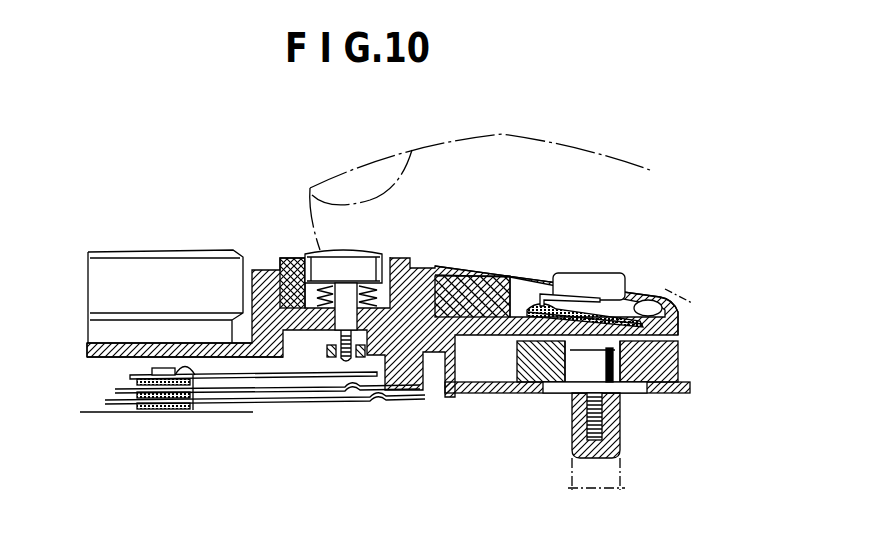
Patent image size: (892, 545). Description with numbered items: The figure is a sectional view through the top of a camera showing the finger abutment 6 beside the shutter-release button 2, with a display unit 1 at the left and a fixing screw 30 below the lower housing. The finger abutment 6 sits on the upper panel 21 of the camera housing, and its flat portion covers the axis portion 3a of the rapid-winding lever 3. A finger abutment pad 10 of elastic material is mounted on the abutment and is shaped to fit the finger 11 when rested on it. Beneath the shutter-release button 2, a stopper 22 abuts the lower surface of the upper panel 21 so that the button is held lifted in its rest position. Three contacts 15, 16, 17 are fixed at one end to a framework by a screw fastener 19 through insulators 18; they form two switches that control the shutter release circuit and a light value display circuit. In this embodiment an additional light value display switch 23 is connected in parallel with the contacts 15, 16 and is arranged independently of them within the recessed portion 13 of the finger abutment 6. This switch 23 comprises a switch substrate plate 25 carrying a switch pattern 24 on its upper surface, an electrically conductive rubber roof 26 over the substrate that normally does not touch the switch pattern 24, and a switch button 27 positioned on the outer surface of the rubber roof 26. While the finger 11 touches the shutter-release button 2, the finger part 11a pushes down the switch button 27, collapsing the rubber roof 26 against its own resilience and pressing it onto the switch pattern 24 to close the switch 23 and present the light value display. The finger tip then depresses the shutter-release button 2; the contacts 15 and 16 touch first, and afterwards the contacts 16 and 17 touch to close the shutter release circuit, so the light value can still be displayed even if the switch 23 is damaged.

The display unit 1 is at (153, 270).
The shutter-release button 2 is at (328, 263).
The rapid-winding lever 3 is at (665, 370).
The axis portion of the rapid-winding lever 3a is at (580, 372).
The finger abutment 6 is at (450, 264).
The finger abutment pad 10 is at (492, 270).
The finger 11 is at (557, 145).
The finger part 11a is at (686, 300).
The recessed portion 13 is at (680, 330).
The contact 15 is at (271, 381).
The contact 16 is at (295, 393).
The contact 17 is at (326, 402).
The insulators 18 is at (137, 406).
The screw fastener 19 is at (178, 364).
The upper panel 21 is at (88, 352).
The stopper 22 is at (330, 352).
The light value display switch 23 is at (652, 300).
The switch pattern 24 is at (285, 259).
The switch substrate plate 25 is at (540, 292).
The electrically conductive rubber roof 26 is at (626, 298).
The switch button 27 is at (591, 280).
The fixing screw 30 is at (618, 447).